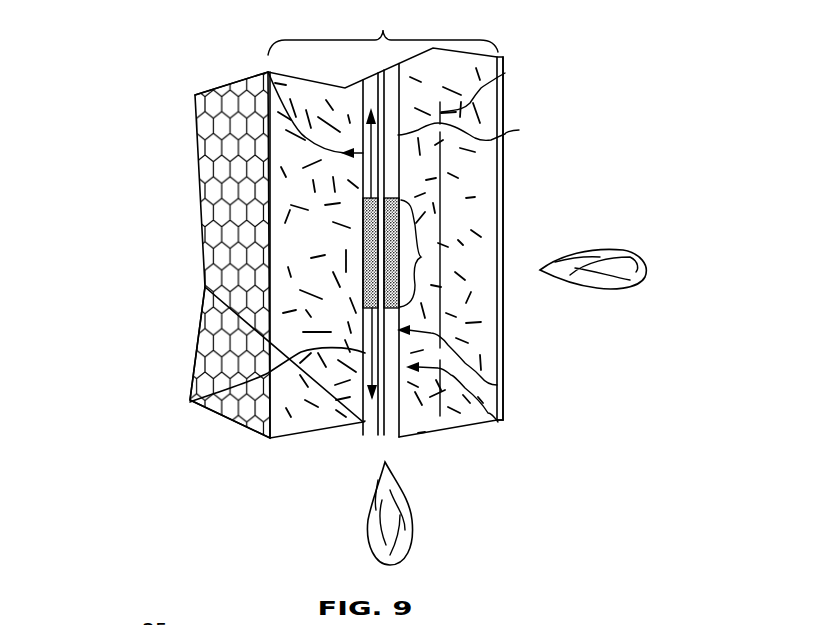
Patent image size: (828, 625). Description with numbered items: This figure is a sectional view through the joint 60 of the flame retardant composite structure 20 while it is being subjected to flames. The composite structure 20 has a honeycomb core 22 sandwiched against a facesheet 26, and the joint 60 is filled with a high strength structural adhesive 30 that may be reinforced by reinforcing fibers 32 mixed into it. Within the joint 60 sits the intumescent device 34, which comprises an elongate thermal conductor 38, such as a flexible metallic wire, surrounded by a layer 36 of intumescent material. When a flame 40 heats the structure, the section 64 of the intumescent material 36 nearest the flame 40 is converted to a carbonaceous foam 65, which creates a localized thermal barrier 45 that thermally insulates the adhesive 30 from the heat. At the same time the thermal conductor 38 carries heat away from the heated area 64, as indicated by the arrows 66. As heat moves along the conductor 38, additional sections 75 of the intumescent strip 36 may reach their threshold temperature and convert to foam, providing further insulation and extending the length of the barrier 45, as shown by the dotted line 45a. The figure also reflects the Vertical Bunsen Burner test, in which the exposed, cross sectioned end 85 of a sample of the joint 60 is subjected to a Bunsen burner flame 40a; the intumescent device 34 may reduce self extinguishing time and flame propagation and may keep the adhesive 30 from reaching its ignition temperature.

The flame retardant composite structure 20 is at (174, 105).
The core 22 is at (232, 229).
The facesheet 26 is at (507, 312).
The structural adhesive 30 is at (283, 198).
The reinforcing fibers 32 is at (305, 294).
The intumescent device 34 is at (503, 420).
The layer of intumescent material 36 is at (398, 412).
The elongate thermal conductor 38 is at (370, 420).
The flame 40 is at (593, 248).
The Bunsen burner flame 40a is at (393, 530).
The localized thermal barrier 45 is at (432, 227).
The dotted line 45a is at (505, 73).
The joint 60 is at (383, 30).
The section of intumescent material 64 is at (421, 256).
The carbonaceous foam 65 is at (361, 233).
The arrows 66 is at (268, 72).
The additional sections 75 is at (497, 385).
The exposed cross sectioned end 85 is at (430, 455).